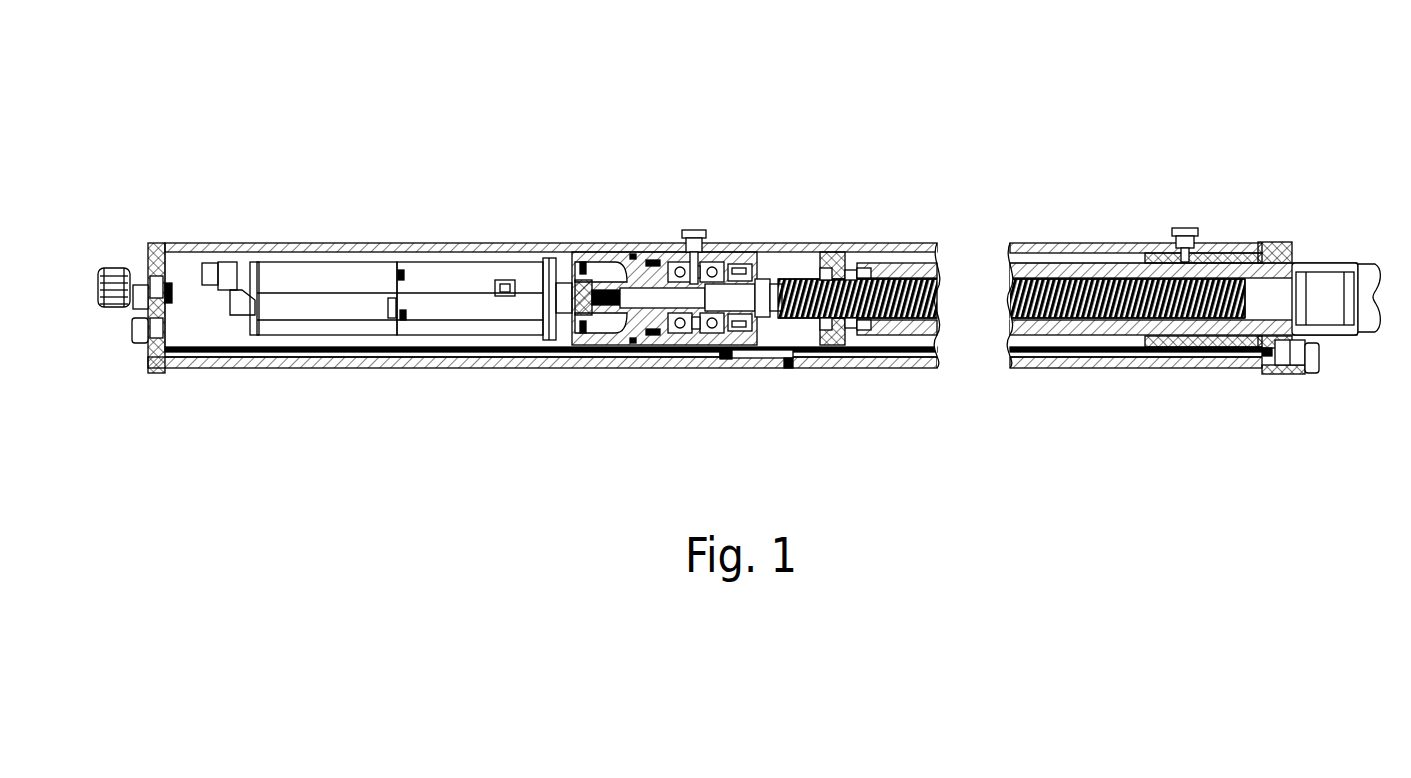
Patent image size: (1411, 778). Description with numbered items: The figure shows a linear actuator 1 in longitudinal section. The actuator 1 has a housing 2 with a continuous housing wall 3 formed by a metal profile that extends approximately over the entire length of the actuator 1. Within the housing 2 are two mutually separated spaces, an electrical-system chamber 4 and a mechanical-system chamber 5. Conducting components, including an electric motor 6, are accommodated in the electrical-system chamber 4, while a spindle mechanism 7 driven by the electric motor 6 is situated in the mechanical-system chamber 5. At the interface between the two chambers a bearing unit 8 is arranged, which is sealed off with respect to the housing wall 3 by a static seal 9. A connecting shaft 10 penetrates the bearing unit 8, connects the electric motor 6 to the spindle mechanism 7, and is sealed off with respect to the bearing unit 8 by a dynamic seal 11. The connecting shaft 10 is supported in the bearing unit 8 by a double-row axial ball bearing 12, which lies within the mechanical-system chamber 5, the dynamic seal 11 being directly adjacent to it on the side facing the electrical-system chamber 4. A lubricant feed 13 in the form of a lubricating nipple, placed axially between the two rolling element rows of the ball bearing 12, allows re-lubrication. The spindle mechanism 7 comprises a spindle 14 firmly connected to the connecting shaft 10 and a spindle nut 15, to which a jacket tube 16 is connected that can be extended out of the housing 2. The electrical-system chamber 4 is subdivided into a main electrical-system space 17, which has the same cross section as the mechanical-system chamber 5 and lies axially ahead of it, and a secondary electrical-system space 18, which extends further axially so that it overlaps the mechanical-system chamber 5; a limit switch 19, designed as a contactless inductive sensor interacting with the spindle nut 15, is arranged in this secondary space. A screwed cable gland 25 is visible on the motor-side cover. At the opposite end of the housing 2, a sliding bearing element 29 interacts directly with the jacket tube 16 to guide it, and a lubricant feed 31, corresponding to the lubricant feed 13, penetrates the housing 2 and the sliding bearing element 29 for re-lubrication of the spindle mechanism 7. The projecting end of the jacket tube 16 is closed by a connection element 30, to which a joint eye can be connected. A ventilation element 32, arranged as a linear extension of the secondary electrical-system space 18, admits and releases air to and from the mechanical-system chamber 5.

The actuator 1 is at (1122, 128).
The housing 2 is at (437, 372).
The housing wall 3 is at (1052, 246).
The electrical-system chamber 4 is at (200, 332).
The mechanical-system chamber 5 is at (790, 326).
The electric motor 6 is at (386, 262).
The spindle mechanism 7 is at (930, 380).
The bearing unit 8 is at (706, 372).
The static seal 9 is at (636, 252).
The connecting shaft 10 is at (600, 312).
The dynamic seal 11 is at (662, 327).
The double-row axial ball bearing 12 is at (716, 258).
The lubricant feed 13 is at (689, 230).
The spindle 14 is at (1088, 314).
The spindle nut 15 is at (876, 333).
The jacket tube 16 is at (1325, 262).
The main electrical-system space 17 is at (188, 262).
The secondary electrical-system space 18 is at (248, 360).
The limit switch 19 is at (768, 358).
The screwed cable gland 25 is at (110, 266).
The sliding bearing element 29 is at (1185, 336).
The connection element 30 is at (1368, 336).
The lubricant feed 31 is at (1175, 228).
The ventilation element 32 is at (1313, 378).